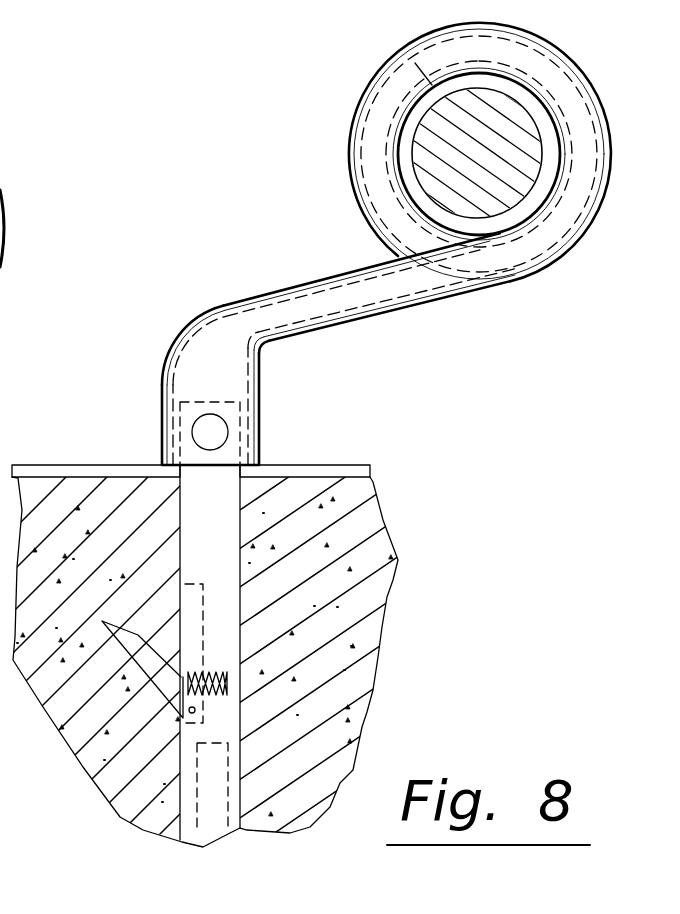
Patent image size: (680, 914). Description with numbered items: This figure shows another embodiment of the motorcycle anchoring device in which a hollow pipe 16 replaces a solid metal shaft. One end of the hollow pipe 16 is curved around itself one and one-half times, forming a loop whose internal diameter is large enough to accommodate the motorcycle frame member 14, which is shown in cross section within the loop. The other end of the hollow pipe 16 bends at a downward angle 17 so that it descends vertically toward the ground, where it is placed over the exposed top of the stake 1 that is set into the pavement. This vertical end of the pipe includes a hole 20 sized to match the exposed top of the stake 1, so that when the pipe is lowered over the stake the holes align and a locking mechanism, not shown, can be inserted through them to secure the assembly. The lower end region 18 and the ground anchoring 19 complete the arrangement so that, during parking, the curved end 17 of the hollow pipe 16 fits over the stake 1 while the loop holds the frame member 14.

The stake 1 is at (190, 402).
The motorcycle frame member 14 is at (527, 182).
The hollow pipe 16 is at (298, 288).
The downward angle 17 is at (175, 347).
The vertical base of post 18 is at (260, 460).
The ground / pavement 19 is at (142, 463).
The hole 20 is at (227, 422).